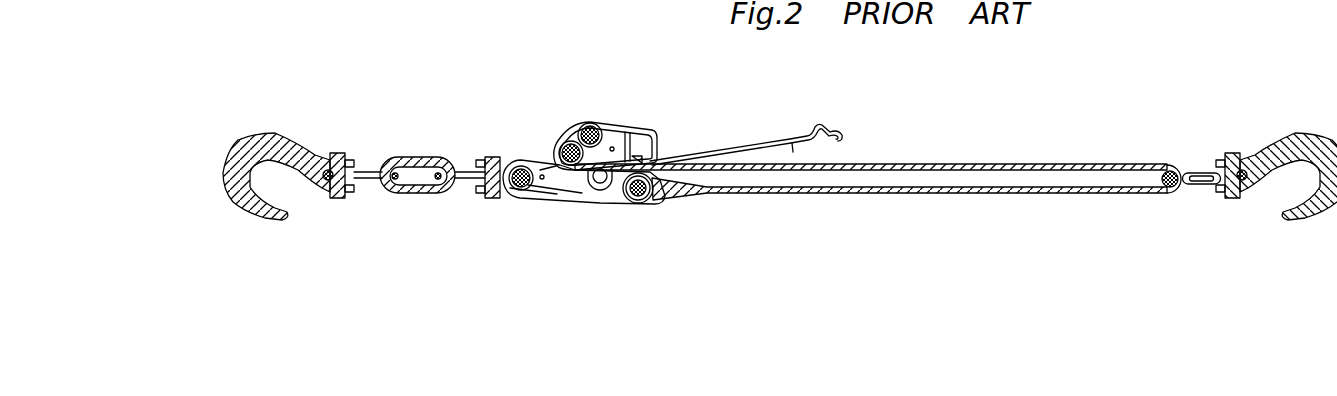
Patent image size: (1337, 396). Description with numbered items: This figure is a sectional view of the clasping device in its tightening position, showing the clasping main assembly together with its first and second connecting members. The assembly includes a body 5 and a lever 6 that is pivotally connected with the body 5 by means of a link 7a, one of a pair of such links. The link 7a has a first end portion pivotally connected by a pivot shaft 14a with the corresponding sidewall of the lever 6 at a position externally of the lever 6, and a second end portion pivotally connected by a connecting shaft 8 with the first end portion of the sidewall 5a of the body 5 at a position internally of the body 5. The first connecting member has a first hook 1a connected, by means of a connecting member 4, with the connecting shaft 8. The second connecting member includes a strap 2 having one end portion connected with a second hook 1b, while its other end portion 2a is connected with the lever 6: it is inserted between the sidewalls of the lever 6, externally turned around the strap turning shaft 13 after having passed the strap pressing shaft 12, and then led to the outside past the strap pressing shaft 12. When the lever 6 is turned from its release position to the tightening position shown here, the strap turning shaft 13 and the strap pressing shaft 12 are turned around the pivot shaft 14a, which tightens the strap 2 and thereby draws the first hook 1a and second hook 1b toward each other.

The first hook 1a is at (284, 143).
The second hook 1b is at (1312, 135).
The strap 2 is at (910, 194).
The other end portion of strap 2a is at (845, 137).
The connecting member 4 is at (420, 152).
The body 5 is at (576, 202).
The sidewall of body 5a is at (622, 202).
The lever 6 is at (655, 129).
The link 7a is at (543, 165).
The connecting shaft 8 is at (521, 168).
The strap pressing shaft 12 is at (570, 142).
The strap turning shaft 13 is at (594, 126).
The pivot shaft 14a is at (600, 184).